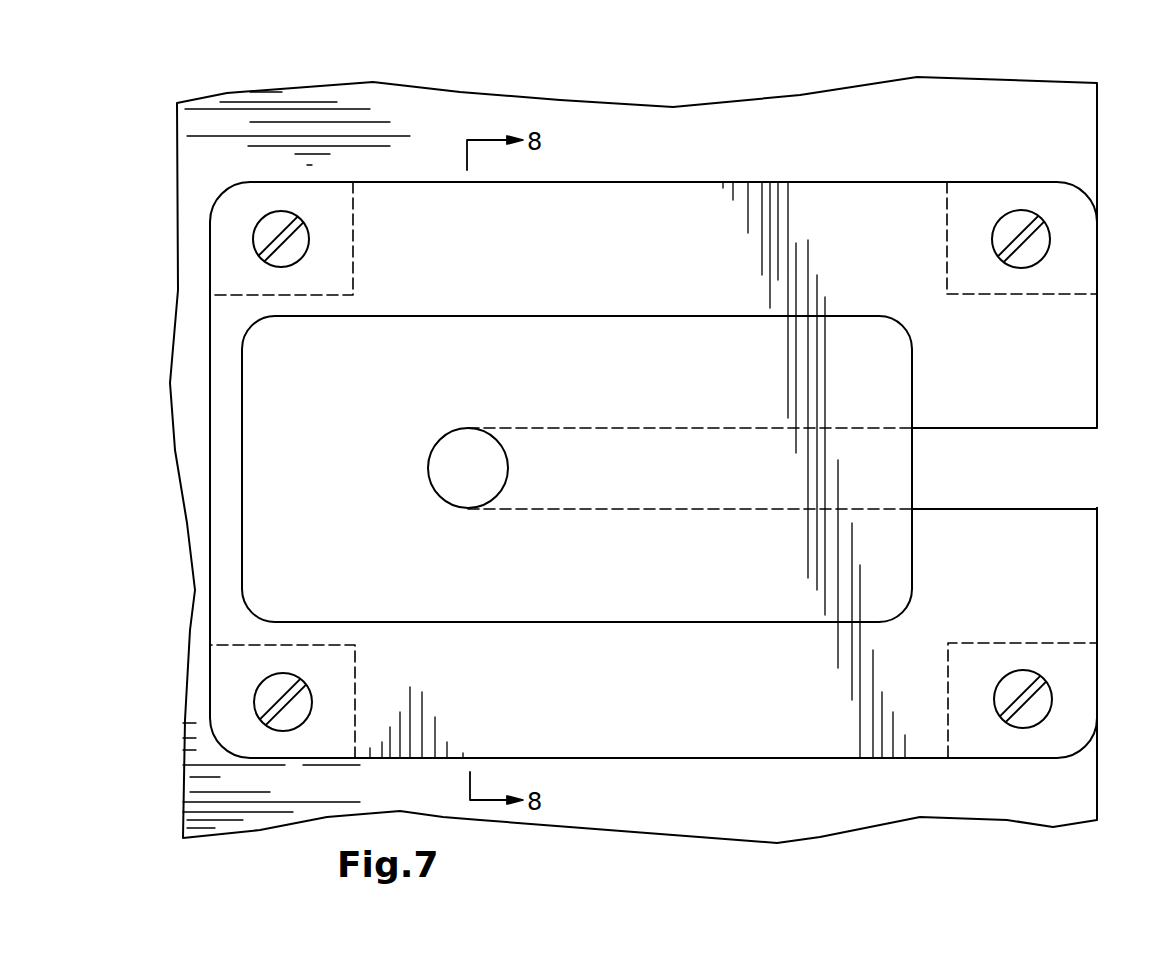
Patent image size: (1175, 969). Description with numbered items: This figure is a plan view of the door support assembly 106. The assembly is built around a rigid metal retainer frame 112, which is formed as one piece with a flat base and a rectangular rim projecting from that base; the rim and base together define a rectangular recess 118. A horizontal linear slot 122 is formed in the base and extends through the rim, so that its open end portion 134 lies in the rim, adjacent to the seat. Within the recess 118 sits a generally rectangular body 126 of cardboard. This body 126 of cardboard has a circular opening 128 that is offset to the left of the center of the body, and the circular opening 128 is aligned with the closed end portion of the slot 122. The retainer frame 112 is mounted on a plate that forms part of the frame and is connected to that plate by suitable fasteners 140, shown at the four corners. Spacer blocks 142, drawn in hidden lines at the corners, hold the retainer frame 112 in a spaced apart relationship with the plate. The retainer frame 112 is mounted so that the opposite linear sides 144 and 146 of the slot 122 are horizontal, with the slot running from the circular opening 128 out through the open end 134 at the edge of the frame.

The door support assembly 106 is at (865, 108).
The rigid metal retainer frame 112 is at (910, 178).
The rectangular recess 118 is at (625, 622).
The horizontal linear slot 122 is at (728, 414).
The body of cardboard 126 is at (275, 550).
The circular opening 128 is at (437, 490).
The open end portion of the slot 134 is at (1090, 473).
The fasteners 140 is at (272, 223).
The spacer blocks 142 is at (353, 245).
The linear side of the slot 144 is at (613, 427).
The linear side of the slot 146 is at (657, 510).